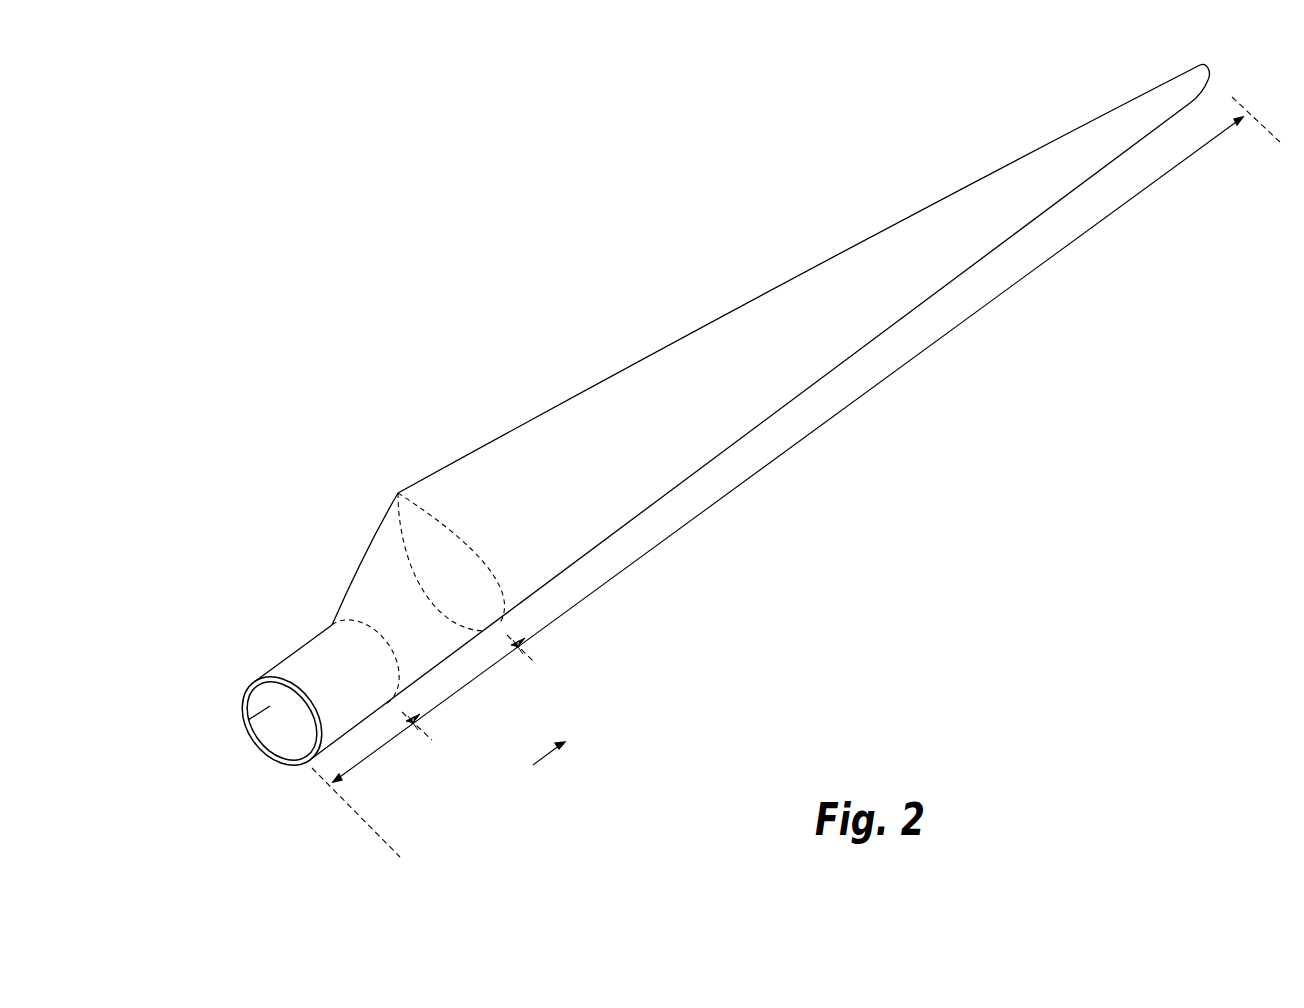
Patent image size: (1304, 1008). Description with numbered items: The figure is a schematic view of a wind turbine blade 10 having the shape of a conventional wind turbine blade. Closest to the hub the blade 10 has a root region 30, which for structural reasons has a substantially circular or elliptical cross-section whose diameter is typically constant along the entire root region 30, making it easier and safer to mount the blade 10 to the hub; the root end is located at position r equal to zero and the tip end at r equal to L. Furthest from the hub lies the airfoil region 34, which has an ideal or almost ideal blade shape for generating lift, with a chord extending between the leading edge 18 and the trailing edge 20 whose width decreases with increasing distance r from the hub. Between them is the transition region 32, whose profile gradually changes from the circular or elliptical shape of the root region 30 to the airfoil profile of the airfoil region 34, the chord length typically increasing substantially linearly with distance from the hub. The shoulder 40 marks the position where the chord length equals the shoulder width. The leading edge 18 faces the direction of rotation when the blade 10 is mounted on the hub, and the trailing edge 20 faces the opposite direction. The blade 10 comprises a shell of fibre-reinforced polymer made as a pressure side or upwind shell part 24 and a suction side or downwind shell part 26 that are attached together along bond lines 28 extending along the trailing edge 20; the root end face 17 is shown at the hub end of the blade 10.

The wind turbine blade 10 is at (753, 462).
The root end 17 is at (243, 722).
The leading edge 18 is at (915, 309).
The trailing edge 20 is at (787, 281).
The pressure side or upwind shell part 24 is at (273, 673).
The suction side or downwind shell part 26 is at (283, 760).
The bond lines 28 is at (257, 683).
The root region 30 is at (377, 752).
The transition region 32 is at (470, 684).
The airfoil region 34 is at (810, 434).
The shoulder 40 is at (398, 492).